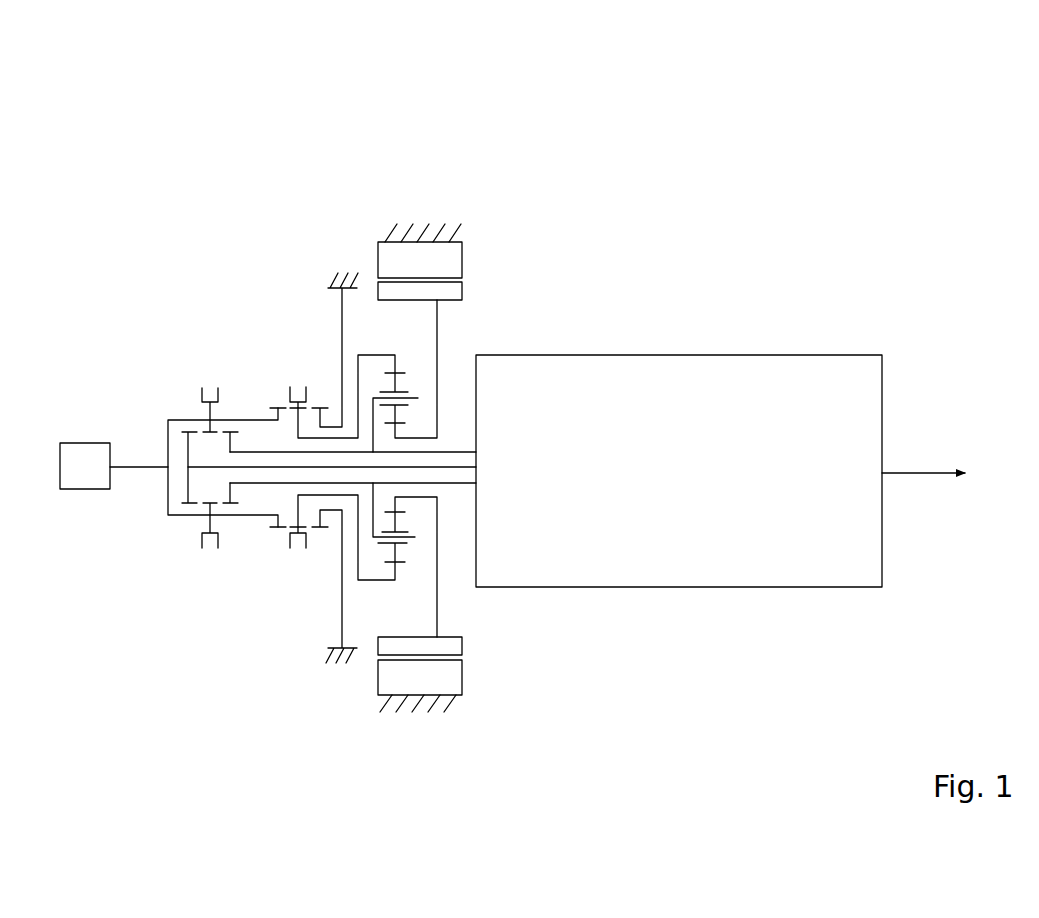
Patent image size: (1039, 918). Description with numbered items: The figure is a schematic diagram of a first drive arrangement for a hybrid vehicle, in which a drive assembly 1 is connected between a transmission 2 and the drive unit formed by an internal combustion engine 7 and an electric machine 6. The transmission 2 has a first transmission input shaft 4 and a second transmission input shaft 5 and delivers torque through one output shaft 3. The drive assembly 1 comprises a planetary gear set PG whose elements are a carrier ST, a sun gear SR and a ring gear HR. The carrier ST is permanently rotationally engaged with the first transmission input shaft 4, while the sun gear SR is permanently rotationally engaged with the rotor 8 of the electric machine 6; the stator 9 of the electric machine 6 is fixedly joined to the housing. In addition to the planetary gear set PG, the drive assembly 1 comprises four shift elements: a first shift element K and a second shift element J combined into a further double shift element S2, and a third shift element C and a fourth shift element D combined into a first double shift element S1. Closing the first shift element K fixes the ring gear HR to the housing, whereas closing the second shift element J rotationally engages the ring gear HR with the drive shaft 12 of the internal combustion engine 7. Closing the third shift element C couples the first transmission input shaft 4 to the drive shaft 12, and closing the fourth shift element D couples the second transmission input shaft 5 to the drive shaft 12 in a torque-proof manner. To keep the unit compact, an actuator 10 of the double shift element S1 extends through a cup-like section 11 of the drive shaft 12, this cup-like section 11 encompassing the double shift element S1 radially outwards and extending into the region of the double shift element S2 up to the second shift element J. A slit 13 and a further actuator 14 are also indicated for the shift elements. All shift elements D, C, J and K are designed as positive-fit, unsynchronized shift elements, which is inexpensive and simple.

The drive assembly 1 is at (532, 90).
The transmission 2 is at (840, 355).
The output shaft 3 is at (917, 473).
The transmission input shaft 4 is at (445, 452).
The transmission input shaft 5 is at (275, 470).
The electric machine 6 is at (448, 147).
The internal combustion engine 7 is at (88, 478).
The rotor 8 is at (460, 291).
The stator 9 is at (458, 266).
The actuator 10 is at (205, 514).
The cup-like section 11 is at (183, 418).
The drive shaft 12 is at (152, 466).
The slit 13 is at (180, 517).
The actuator 14 is at (299, 558).
The ring gear HR is at (382, 352).
The carrier ST is at (413, 537).
The sun gear SR is at (397, 505).
The planetary gear set PG is at (387, 585).
The first double shift element S1 is at (233, 366).
The further double shift element S2 is at (323, 366).
The fourth shift element D is at (206, 398).
The third shift element C is at (228, 433).
The second shift element J is at (280, 445).
The first shift element K is at (333, 468).